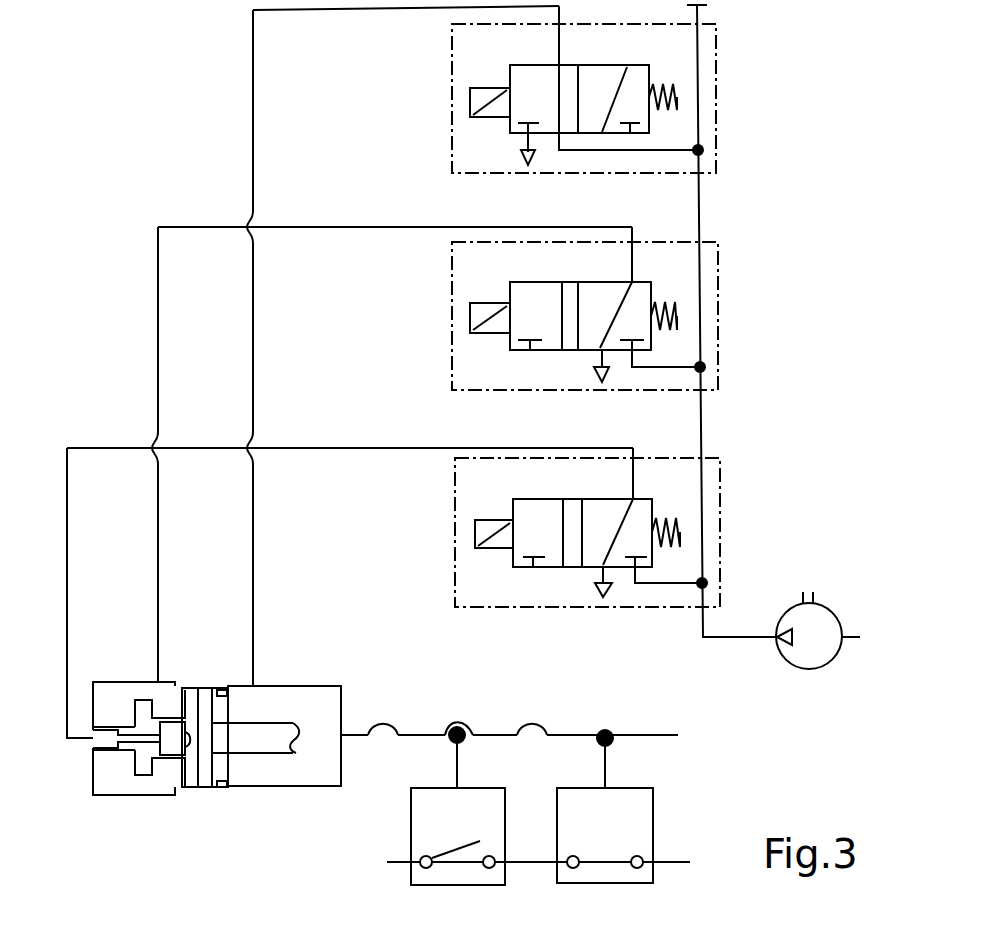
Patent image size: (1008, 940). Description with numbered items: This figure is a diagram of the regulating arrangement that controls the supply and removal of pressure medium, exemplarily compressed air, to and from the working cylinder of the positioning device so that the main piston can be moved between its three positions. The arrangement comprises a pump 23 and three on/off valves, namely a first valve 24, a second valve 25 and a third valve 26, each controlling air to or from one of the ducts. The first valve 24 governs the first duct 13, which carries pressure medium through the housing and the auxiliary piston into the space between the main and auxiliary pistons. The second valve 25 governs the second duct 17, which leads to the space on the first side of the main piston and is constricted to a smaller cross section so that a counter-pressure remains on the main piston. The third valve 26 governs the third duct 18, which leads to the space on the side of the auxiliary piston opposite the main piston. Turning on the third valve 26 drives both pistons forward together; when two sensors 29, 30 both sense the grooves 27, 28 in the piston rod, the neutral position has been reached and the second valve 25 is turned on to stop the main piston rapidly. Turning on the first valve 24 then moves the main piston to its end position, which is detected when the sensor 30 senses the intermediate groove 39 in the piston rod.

The first duct 13 is at (85, 757).
The second duct 17 is at (247, 670).
The third duct 18 is at (157, 670).
The pump 23 is at (822, 669).
The first valve 24 is at (720, 528).
The second valve 25 is at (716, 95).
The third valve 26 is at (718, 312).
The recess 27 is at (533, 720).
The recess 28 is at (385, 720).
The sensor 29 is at (410, 823).
The sensor 30 is at (653, 828).
The intermediate groove 39 is at (460, 722).